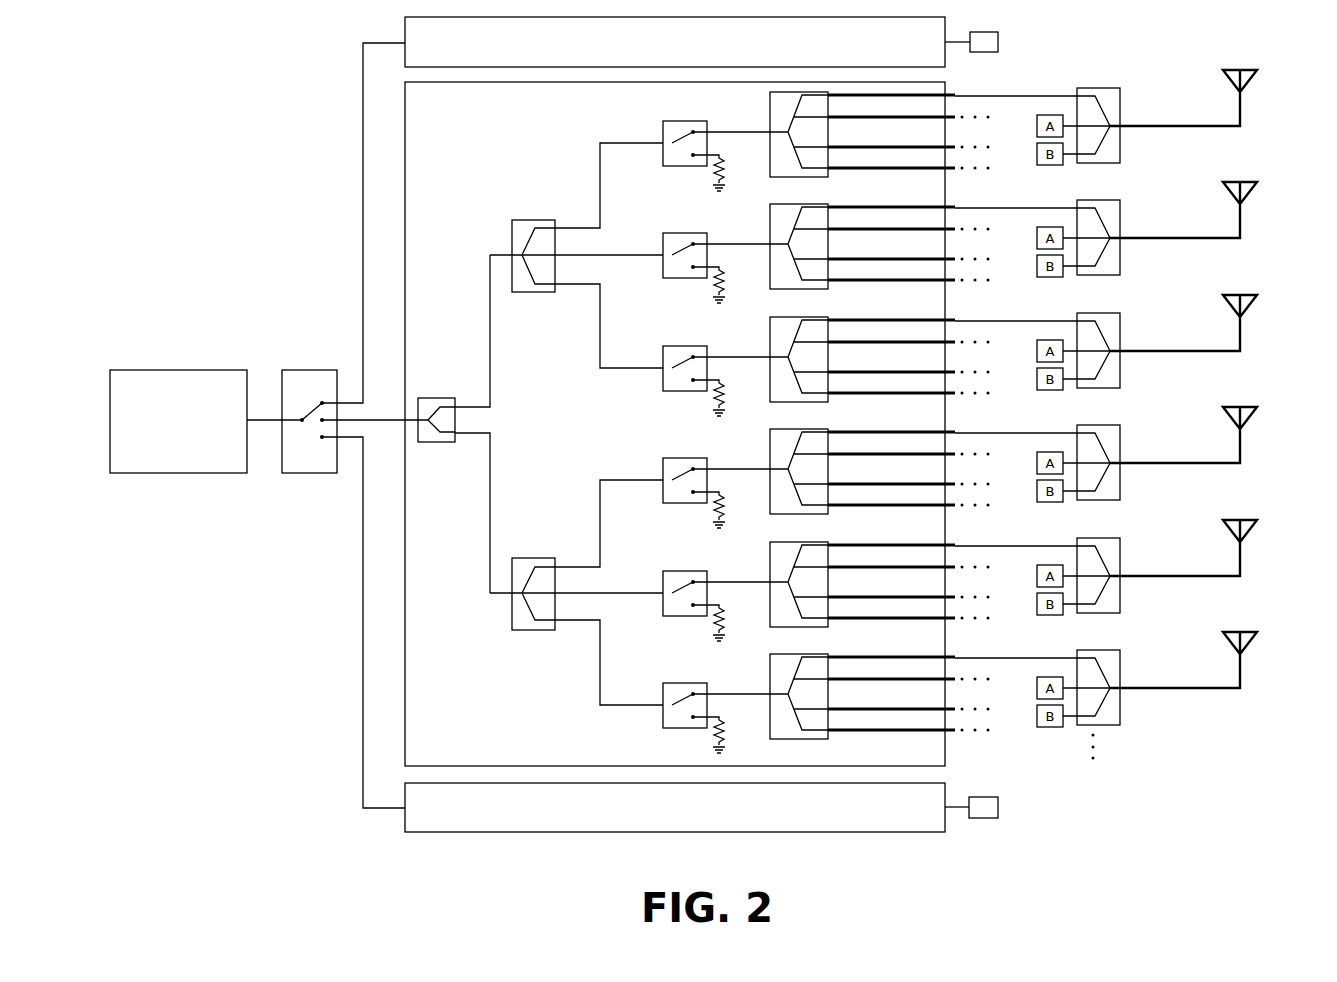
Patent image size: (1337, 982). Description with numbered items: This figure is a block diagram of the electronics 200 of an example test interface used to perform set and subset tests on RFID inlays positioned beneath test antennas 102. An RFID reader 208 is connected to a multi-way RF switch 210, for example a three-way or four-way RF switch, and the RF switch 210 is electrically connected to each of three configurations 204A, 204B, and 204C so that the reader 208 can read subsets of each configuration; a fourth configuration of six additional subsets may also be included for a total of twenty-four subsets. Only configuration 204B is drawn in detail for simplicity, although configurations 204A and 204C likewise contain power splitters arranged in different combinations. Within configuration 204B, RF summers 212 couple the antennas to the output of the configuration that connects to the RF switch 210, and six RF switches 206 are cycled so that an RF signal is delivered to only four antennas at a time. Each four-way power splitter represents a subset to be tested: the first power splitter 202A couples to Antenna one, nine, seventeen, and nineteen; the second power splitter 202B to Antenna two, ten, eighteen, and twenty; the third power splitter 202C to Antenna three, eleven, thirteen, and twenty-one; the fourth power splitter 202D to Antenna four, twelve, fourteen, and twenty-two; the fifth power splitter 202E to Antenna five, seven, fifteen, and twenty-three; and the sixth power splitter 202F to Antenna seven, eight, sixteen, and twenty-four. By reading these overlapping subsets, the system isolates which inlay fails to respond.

The electronics 200 is at (289, 78).
The test antenna 102 is at (1240, 70).
The first power splitter 202A is at (770, 107).
The second power splitter 202B is at (770, 219).
The third power splitter 202C is at (770, 332).
The fourth power splitter 202D is at (770, 444).
The fifth power splitter 202E is at (770, 557).
The sixth power splitter 202F is at (770, 669).
The configuration 204A is at (950, 28).
The configuration 204B is at (945, 82).
The configuration 204C is at (947, 783).
The RF switch 206 is at (663, 125).
The RFID reader 208 is at (206, 421).
The multi-way RF switch 210 is at (290, 370).
The RF summer 212 is at (428, 442).